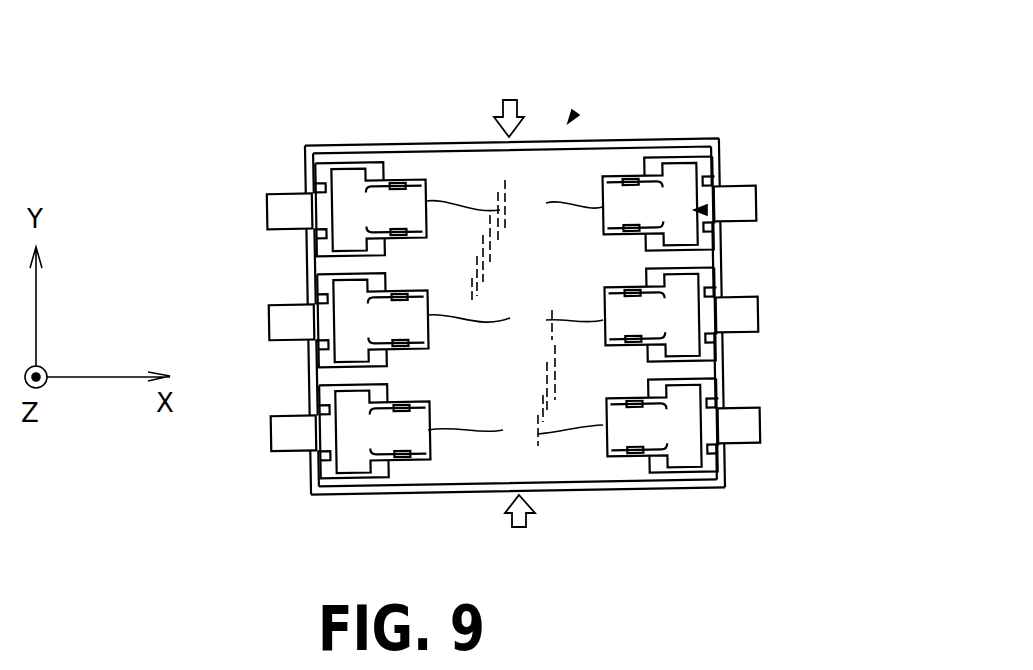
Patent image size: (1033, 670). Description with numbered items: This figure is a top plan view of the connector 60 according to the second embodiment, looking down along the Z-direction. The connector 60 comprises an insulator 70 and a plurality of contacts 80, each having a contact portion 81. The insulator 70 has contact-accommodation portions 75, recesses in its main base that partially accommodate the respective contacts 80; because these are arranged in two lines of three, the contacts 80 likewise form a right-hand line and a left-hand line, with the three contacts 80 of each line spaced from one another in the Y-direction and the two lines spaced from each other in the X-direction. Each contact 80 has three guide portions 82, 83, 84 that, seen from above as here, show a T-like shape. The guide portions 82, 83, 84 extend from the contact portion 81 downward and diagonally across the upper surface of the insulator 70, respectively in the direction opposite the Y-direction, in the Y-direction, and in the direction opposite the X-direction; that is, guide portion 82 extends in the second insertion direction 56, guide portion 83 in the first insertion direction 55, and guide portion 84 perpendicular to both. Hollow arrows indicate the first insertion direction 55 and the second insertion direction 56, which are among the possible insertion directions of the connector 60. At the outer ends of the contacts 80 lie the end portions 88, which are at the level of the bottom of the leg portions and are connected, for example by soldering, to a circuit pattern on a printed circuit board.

The first insertion direction 55 is at (508, 518).
The second insertion direction 56 is at (500, 110).
The connector 60 is at (574, 112).
The insulator 70 is at (668, 140).
The contact-accommodation portion 75 is at (653, 478).
The contact 80 is at (707, 208).
The contact portion 81 is at (312, 190).
The guide portion 82 is at (318, 258).
The guide portion 83 is at (308, 372).
The guide portion 84 is at (514, 313).
The end portion 88 is at (268, 212).